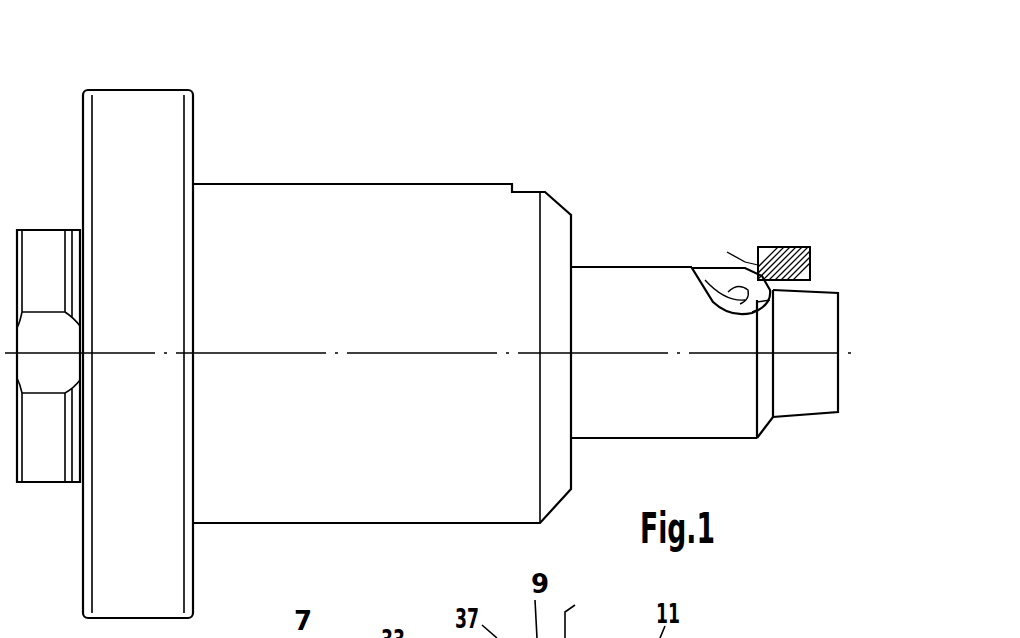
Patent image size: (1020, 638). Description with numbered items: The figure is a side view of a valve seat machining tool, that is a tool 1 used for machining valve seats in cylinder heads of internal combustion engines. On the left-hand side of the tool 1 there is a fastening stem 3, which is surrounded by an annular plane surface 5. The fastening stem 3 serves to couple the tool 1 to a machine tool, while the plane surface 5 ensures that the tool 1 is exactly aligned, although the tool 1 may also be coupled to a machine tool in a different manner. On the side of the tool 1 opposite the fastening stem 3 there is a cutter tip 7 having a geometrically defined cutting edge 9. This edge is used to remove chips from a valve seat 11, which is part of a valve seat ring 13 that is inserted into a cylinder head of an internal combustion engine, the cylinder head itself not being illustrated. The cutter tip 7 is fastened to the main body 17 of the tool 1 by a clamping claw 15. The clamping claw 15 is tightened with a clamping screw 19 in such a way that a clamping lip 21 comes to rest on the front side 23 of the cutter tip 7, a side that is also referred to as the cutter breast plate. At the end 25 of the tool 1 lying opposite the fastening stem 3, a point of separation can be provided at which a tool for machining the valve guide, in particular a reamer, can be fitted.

The tool 1 is at (388, 158).
The fastening stem 3 is at (42, 228).
The annular plane surface 5 is at (82, 140).
The cutter tip 7 is at (742, 236).
The cutting edge 9 is at (810, 266).
The valve seat 11 is at (764, 250).
The valve seat ring 13 is at (800, 247).
The clamping claw 15 is at (700, 270).
The main body 17 is at (627, 285).
The clamping screw 19 is at (757, 310).
The clamping lip 21 is at (757, 302).
The front side 23 is at (727, 252).
The end 25 is at (790, 398).